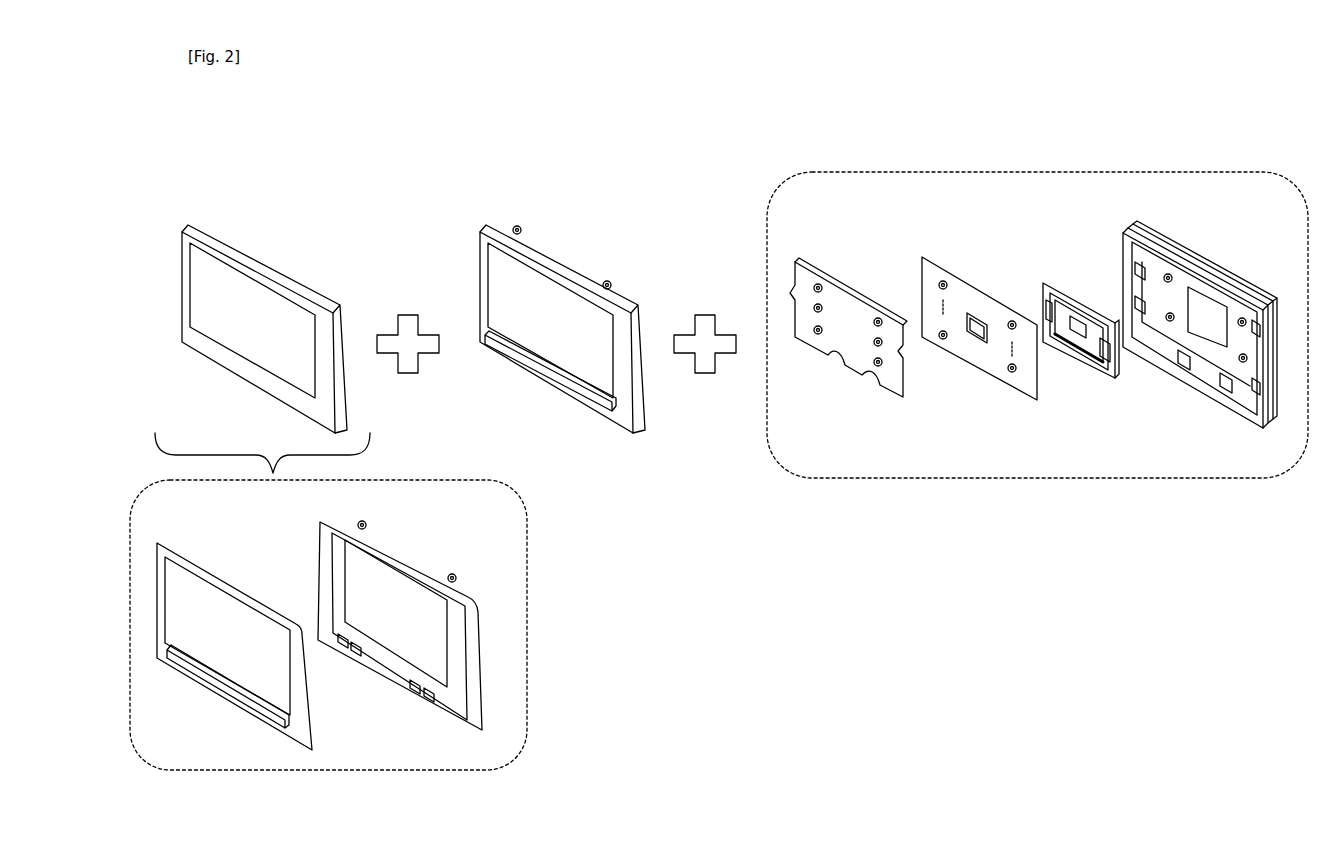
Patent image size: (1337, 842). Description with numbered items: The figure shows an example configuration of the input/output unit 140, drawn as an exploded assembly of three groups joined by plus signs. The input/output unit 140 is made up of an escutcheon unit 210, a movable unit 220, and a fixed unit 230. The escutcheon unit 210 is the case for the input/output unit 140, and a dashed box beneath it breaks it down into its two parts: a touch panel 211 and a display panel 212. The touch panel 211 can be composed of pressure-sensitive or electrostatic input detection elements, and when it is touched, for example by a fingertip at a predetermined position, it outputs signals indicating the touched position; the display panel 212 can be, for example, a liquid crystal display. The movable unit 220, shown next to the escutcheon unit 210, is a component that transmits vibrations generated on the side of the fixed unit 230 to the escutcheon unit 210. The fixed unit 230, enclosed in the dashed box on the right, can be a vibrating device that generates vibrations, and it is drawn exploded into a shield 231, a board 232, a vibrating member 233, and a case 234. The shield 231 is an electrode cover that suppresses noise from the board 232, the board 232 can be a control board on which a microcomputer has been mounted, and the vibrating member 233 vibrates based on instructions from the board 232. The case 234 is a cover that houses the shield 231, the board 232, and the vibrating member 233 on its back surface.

The input/output unit 140 is at (1186, 100).
The escutcheon unit 210 is at (285, 268).
The touch panel 211 is at (220, 572).
The display panel 212 is at (387, 540).
The movable unit 220 is at (563, 262).
The fixed unit 230 is at (1238, 170).
The shield 231 is at (832, 277).
The board 232 is at (967, 277).
The vibrating member 233 is at (1055, 284).
The case 234 is at (1203, 260).